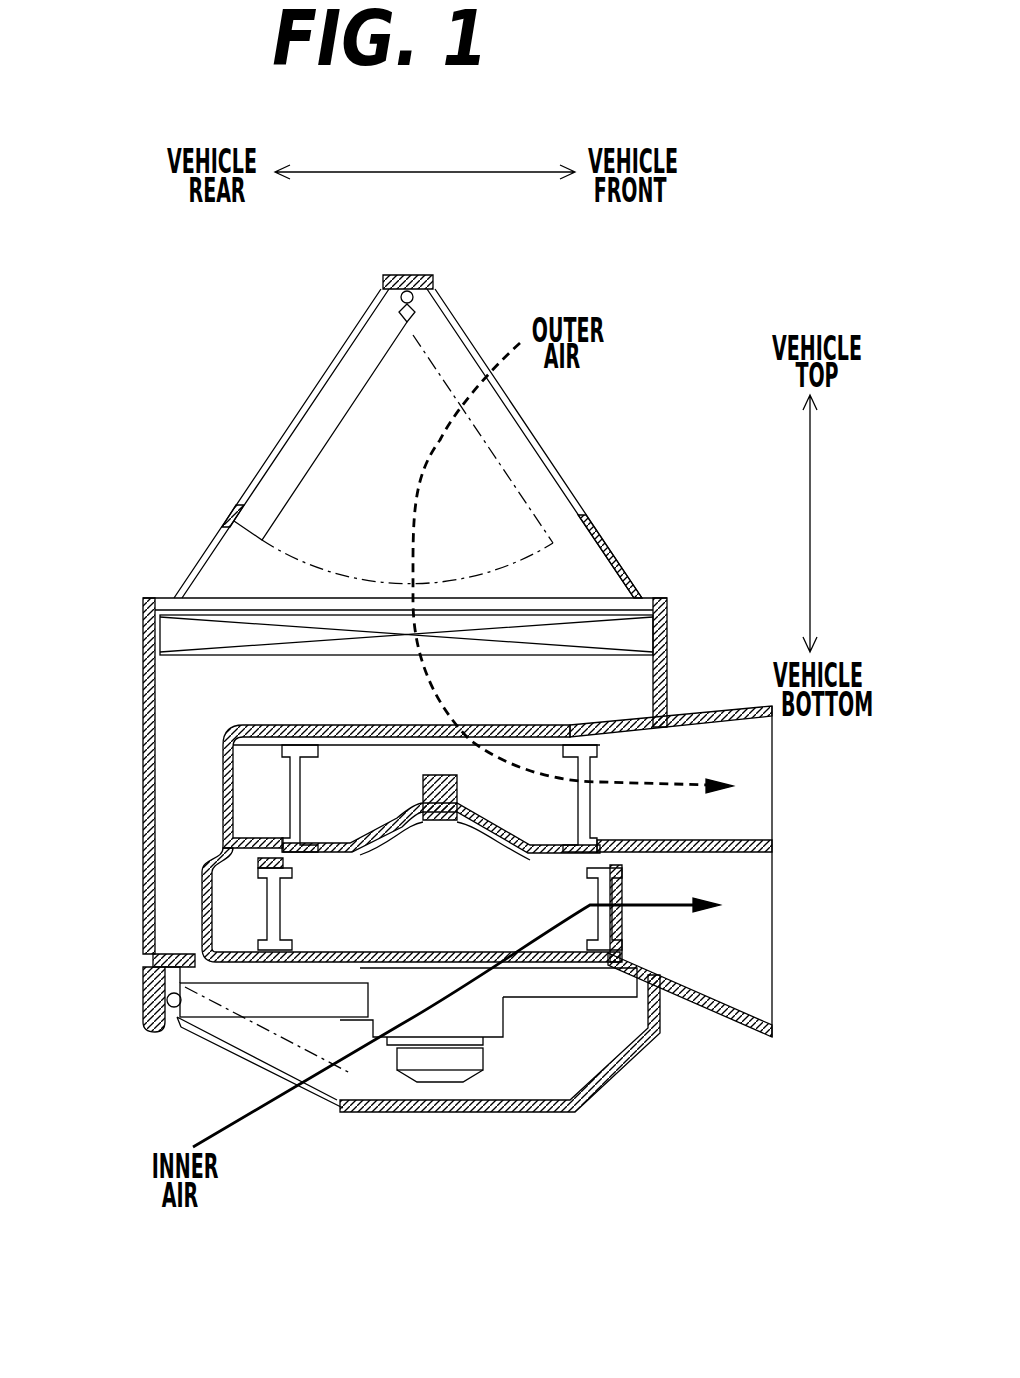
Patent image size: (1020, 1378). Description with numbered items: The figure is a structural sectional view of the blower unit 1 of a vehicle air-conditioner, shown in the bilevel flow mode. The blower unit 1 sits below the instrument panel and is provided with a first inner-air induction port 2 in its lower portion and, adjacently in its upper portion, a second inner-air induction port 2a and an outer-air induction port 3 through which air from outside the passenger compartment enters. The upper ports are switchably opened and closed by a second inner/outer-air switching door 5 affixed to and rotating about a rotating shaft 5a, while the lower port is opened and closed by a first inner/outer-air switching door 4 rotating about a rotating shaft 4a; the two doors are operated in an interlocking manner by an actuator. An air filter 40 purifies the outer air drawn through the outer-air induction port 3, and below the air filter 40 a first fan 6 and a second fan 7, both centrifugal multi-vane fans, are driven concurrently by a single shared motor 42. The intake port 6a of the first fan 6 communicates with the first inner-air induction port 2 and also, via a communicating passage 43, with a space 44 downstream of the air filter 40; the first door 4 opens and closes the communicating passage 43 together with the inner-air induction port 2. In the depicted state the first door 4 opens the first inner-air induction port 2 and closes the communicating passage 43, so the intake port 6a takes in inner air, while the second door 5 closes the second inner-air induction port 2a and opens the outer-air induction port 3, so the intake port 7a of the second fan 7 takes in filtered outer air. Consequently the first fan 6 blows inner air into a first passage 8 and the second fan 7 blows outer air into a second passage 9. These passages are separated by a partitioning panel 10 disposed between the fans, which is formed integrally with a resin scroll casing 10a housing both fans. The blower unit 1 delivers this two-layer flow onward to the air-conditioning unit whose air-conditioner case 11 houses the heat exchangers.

The blower unit 1 is at (102, 611).
The first inner-air induction port 2 is at (307, 1087).
The second inner-air induction port 2a is at (267, 462).
The outer-air induction port 3 is at (558, 470).
The first inner/outer-air switching door 4 is at (213, 1005).
The rotating shaft 4a is at (160, 997).
The second inner/outer-air switching door 5 is at (340, 388).
The rotating shaft 5a is at (407, 290).
The first fan 6 is at (278, 888).
The intake port 6a is at (570, 962).
The second fan 7 is at (302, 797).
The intake port 7a is at (358, 727).
The first passage 8 is at (748, 966).
The second passage 9 is at (748, 760).
The partitioning panel 10 is at (758, 832).
The scroll casing 10a is at (195, 905).
The air-conditioner case 11 is at (634, 562).
The air filter 40 is at (622, 632).
The motor 42 is at (505, 1018).
The communicating passage 43 is at (232, 972).
The space 44 is at (190, 702).